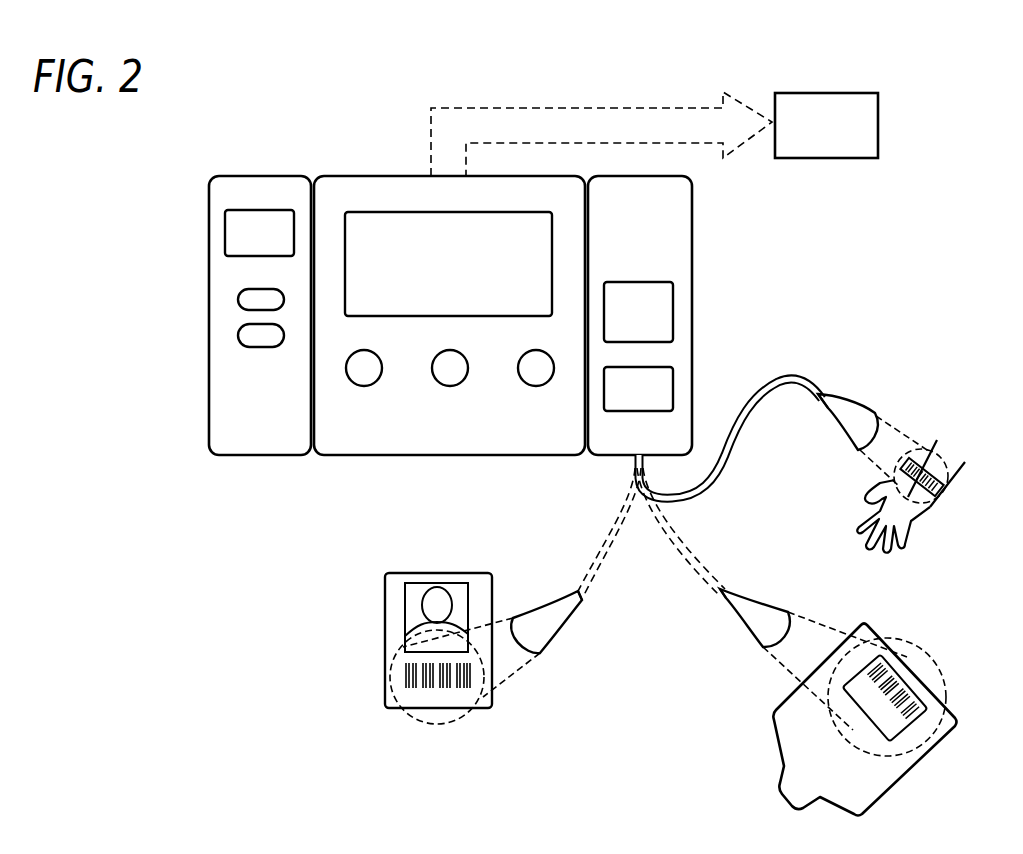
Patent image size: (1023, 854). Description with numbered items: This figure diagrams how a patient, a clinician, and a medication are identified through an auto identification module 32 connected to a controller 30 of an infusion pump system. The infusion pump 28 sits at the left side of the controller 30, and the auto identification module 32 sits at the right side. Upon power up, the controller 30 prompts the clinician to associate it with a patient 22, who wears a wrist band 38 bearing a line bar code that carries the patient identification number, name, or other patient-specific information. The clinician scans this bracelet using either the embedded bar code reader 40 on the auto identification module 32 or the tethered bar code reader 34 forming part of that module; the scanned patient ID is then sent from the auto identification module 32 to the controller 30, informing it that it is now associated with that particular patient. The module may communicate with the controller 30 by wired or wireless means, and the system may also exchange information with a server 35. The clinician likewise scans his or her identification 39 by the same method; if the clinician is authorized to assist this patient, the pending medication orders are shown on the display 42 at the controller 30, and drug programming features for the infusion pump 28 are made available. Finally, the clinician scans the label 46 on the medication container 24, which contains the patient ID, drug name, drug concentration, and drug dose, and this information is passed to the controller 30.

The patient 22 is at (862, 500).
The IV fluid container 24 is at (864, 720).
The infusion pump 28 is at (252, 437).
The controller 30 is at (449, 319).
The auto identification module 32 is at (688, 315).
The bar code reader 34 is at (857, 411).
The server 35 is at (878, 125).
The wrist band 38 is at (943, 488).
The clinician identification 39 is at (437, 573).
The embedded bar code reader 40 is at (673, 310).
The display 42 is at (367, 227).
The label 46 is at (893, 743).